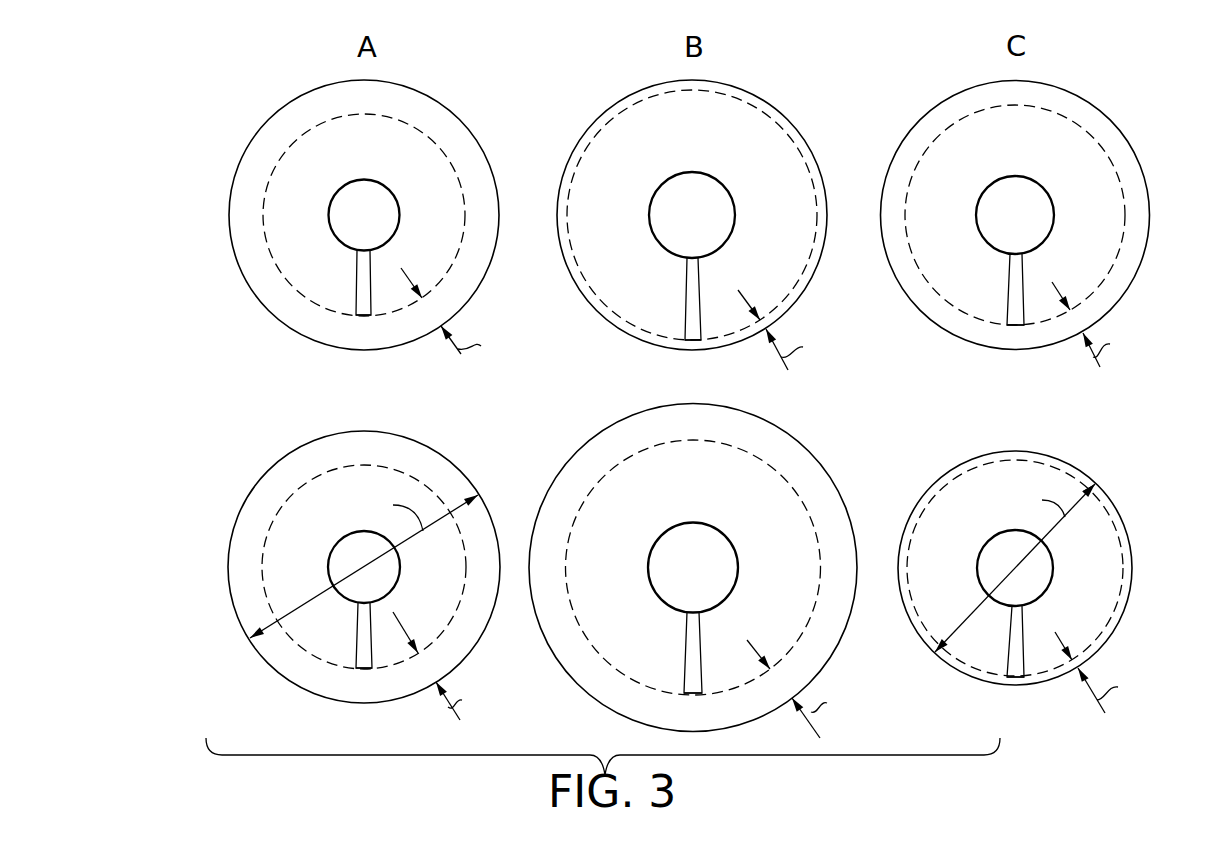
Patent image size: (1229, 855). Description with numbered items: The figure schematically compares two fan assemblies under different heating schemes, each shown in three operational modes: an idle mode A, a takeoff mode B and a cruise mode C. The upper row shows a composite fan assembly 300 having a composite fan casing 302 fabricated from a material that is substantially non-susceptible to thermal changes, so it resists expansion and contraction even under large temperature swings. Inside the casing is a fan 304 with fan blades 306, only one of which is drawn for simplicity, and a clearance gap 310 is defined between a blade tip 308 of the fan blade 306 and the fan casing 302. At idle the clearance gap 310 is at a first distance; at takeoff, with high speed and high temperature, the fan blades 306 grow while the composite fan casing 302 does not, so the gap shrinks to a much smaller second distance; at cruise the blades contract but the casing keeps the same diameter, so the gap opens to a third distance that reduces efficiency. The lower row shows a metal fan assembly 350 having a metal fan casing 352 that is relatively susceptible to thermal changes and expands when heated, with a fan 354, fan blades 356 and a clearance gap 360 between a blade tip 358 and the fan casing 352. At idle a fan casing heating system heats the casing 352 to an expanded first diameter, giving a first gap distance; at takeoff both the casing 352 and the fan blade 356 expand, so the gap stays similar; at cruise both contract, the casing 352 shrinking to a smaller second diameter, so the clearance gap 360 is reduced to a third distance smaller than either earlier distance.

The composite fan assembly 300 is at (248, 113).
The composite fan casing 302 is at (448, 110).
The fan 304 is at (377, 181).
The fan blade 306 is at (372, 272).
The blade tip 308 is at (363, 318).
The clearance gap 310 is at (290, 300).
The metal fan assembly 350 is at (240, 462).
The metal fan casing 352 is at (440, 455).
The fan 354 is at (343, 538).
The fan blade 356 is at (372, 620).
The blade tip 358 is at (363, 669).
The clearance gap 360 is at (278, 642).